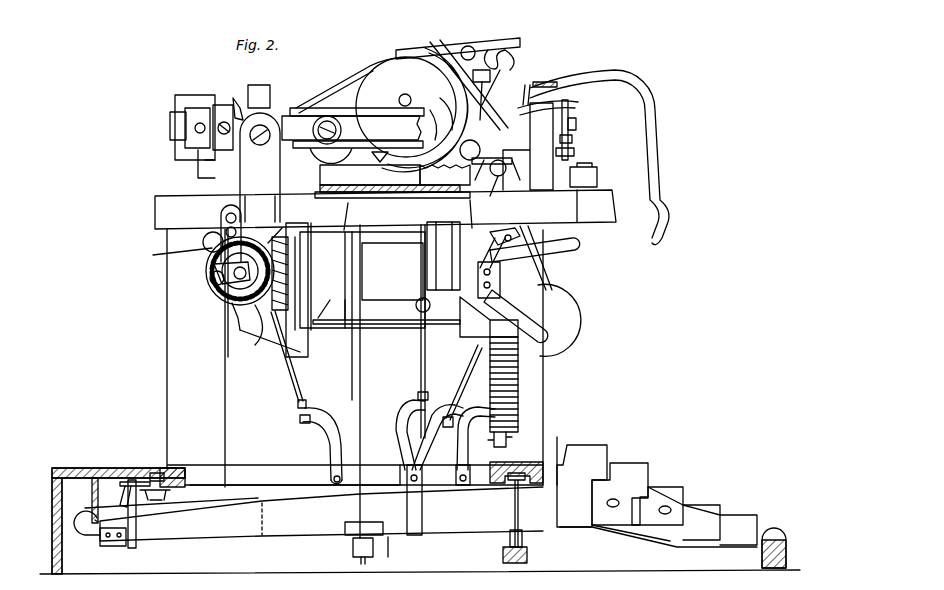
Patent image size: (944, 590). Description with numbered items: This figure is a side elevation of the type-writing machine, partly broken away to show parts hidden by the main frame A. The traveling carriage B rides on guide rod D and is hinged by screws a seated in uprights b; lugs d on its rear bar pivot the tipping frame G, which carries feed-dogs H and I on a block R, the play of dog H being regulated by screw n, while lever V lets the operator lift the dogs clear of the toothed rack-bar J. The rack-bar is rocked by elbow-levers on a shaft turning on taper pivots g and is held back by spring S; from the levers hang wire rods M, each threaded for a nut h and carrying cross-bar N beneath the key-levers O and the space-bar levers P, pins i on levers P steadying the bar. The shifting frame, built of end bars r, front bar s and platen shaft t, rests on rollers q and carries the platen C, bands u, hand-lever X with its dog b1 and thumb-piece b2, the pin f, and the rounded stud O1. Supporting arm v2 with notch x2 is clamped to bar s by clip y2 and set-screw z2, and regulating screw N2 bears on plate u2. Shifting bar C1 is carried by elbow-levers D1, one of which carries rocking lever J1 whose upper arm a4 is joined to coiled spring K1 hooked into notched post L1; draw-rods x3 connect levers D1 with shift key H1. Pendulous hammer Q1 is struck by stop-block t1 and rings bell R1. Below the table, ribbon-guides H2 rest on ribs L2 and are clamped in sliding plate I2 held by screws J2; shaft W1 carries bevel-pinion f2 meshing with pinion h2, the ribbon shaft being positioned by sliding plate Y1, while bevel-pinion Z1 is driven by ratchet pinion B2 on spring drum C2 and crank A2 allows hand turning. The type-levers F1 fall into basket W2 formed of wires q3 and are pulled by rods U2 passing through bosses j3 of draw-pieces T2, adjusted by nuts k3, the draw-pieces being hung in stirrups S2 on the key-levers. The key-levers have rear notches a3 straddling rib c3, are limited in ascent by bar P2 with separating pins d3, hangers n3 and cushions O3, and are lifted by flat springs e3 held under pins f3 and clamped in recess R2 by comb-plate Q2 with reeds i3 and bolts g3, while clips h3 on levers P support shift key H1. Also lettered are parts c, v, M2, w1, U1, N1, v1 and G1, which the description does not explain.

The lever P is at (314, 514).
The plate A is at (385, 209).
The post i3 is at (138, 524).
The plate h3 is at (110, 547).
The hook a3 is at (92, 522).
The pin c3 is at (95, 520).
The bracket R2 is at (125, 481).
The arm Q2 is at (136, 481).
The block g3 is at (157, 472).
The spring e3 is at (155, 495).
The bar f3 is at (212, 497).
The bracket R is at (191, 127).
The block H is at (197, 128).
The block I is at (223, 127).
The box G is at (170, 130).
The screw n is at (196, 129).
The bracket J is at (204, 163).
The post d is at (238, 107).
The block c is at (258, 91).
The arm a is at (260, 140).
The arm base b is at (260, 199).
The platen C is at (376, 107).
The rail r is at (375, 110).
The carriage bar B is at (351, 128).
The screw q is at (342, 130).
The lower rail v is at (358, 154).
The knob t is at (404, 92).
The guide V is at (440, 115).
The guide u2 is at (439, 130).
The guide v2 is at (467, 125).
The roller u is at (468, 151).
The plate s is at (492, 159).
The bracket M2 is at (418, 48).
The pin b1 is at (418, 25).
The roller N2 is at (468, 46).
The hook z2 is at (494, 43).
The spring b2 is at (513, 49).
The link y2 is at (491, 92).
The rod f is at (526, 85).
The pad w1 is at (548, 82).
The lever X is at (599, 157).
The spring plate U1 is at (558, 103).
The post N1 is at (570, 118).
The block O1 is at (578, 125).
The block t1 is at (574, 140).
The block v1 is at (576, 154).
The block D is at (528, 146).
The block H2 is at (370, 175).
The block L2 is at (445, 175).
The roller C1 is at (497, 176).
The arm G1 is at (514, 185).
The link D1 is at (498, 190).
The rod J2 is at (411, 215).
The frame I2 is at (362, 273).
The box x2 is at (392, 271).
The post W1 is at (440, 272).
The bracket F1 is at (331, 307).
The rack P2 is at (287, 283).
The panel W2 is at (295, 350).
The arm Y1 is at (241, 230).
The link B2 is at (282, 228).
The gear Z1 is at (212, 292).
The hub A2 is at (210, 278).
The pinion g is at (206, 247).
The lever S is at (175, 251).
The pawl h2 is at (245, 324).
The link f2 is at (267, 344).
The lever C2 is at (295, 397).
The nut k3 is at (296, 405).
The joint j3 is at (298, 413).
The rod M is at (365, 381).
The bar q3 is at (378, 328).
The rod x3 is at (420, 358).
The plate a4 is at (505, 231).
The lever Q1 is at (540, 265).
The lever J1 is at (546, 330).
The disk R1 is at (570, 335).
The spring K1 is at (490, 358).
The rod U2 is at (466, 370).
The bracket L1 is at (508, 429).
The lever T2 is at (435, 442).
The bar S2 is at (422, 505).
The block N is at (353, 548).
The stem h is at (360, 562).
The post i is at (395, 548).
The rod d3 is at (514, 512).
The sleeve n3 is at (522, 540).
The block O3 is at (527, 556).
The block H1 is at (582, 486).
The step blocks O is at (674, 504).